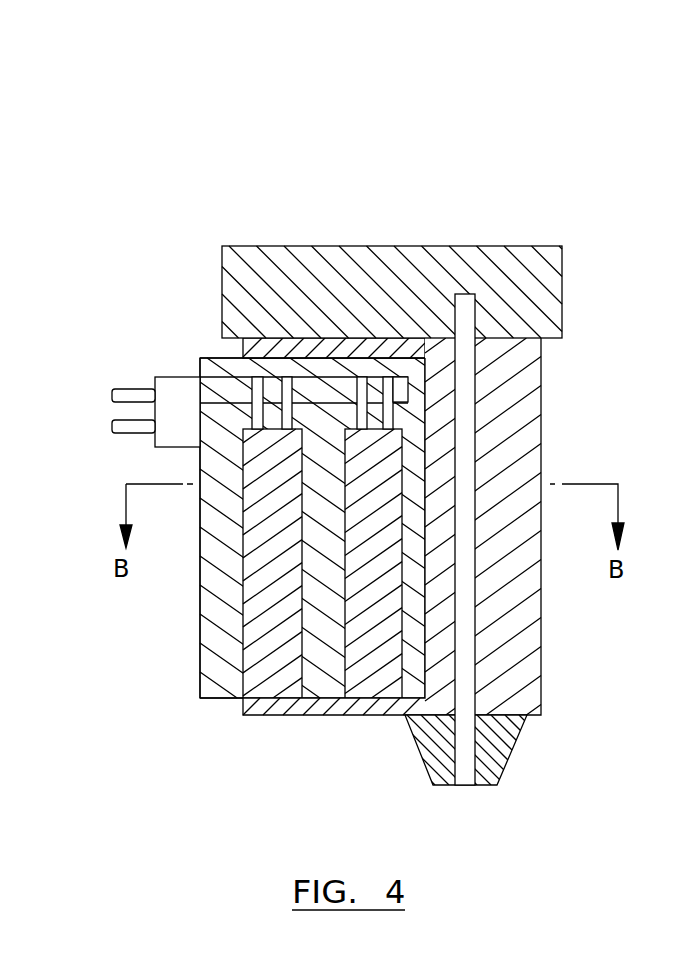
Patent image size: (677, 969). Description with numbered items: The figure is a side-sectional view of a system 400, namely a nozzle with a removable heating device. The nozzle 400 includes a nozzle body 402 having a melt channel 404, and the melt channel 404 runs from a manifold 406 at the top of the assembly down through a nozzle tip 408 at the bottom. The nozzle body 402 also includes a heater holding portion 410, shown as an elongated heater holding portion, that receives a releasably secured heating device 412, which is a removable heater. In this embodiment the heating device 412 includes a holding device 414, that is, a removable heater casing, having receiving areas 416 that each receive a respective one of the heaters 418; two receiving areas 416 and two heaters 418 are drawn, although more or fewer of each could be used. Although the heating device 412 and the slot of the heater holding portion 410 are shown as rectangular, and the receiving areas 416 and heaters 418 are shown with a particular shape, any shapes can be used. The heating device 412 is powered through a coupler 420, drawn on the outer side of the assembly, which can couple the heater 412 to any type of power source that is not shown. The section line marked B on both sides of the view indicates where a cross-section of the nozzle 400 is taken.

The system 400 is at (448, 122).
The nozzle body 402 is at (541, 372).
The melt channel 404 is at (468, 588).
The manifold 406 is at (463, 245).
The nozzle tip 408 is at (505, 743).
The heater holding portion 410 is at (243, 349).
The heating device 412 is at (175, 672).
The holding device 414 is at (212, 698).
The receiving areas 416 is at (332, 682).
The heaters 418 is at (265, 680).
The coupler 420 is at (168, 377).